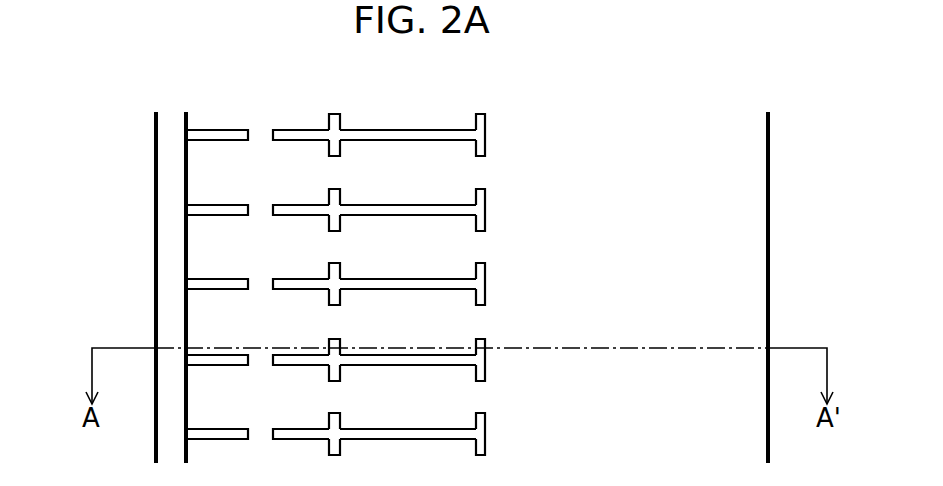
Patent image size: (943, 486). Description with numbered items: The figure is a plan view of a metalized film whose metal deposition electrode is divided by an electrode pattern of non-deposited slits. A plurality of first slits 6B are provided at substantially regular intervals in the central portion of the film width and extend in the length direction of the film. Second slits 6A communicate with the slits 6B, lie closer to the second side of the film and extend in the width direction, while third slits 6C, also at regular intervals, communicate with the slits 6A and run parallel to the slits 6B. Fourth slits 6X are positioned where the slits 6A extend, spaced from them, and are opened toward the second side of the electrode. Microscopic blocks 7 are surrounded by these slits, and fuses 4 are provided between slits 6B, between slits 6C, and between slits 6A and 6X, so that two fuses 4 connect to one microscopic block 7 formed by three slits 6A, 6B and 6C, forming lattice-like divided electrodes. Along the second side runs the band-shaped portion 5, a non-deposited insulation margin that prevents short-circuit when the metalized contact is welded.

The first fuse 4 is at (369, 245).
The band-shaped portion 5 is at (172, 442).
The second slits 6A is at (388, 130).
The first slits 6B is at (483, 113).
The third slits 6C is at (338, 114).
The fourth slits 6X is at (200, 133).
The microscopic block 7 is at (230, 260).